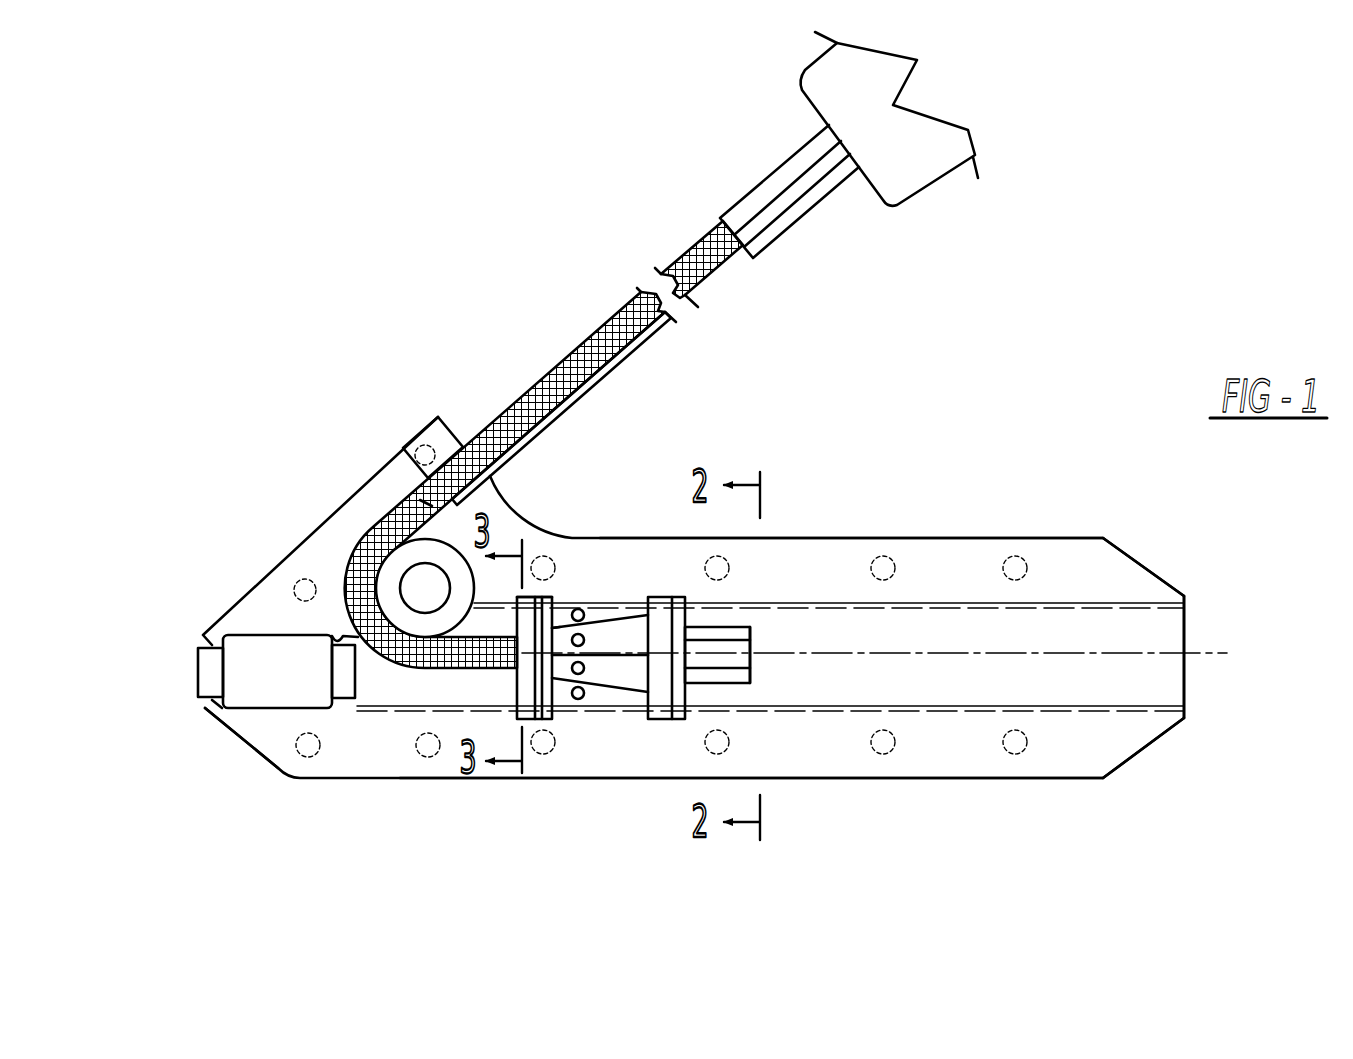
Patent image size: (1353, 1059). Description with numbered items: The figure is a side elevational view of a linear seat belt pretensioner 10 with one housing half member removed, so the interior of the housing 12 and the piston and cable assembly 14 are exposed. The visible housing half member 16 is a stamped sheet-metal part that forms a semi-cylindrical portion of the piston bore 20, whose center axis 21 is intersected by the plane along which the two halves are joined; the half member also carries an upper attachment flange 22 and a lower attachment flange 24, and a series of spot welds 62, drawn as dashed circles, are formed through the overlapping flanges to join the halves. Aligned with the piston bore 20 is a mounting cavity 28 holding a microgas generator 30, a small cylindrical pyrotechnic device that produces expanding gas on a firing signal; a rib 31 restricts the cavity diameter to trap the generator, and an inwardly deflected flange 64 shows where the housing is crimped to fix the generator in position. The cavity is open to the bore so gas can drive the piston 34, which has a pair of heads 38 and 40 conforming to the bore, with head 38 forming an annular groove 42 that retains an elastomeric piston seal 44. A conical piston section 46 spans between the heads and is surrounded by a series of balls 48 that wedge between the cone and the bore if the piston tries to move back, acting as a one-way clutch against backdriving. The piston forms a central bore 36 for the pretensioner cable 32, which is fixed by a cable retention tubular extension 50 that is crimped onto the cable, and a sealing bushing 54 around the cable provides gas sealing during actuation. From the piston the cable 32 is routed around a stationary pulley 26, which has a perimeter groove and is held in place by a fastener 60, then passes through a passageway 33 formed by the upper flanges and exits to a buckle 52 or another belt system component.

The linear pretensioner 10 is at (905, 384).
The housing 12 is at (823, 533).
The piston and cable assembly 14 is at (563, 356).
The housing half member 16 is at (870, 536).
The piston bore 20 is at (1140, 675).
The center axis 21 is at (1210, 653).
The upper attachment flange 22 is at (968, 537).
The lower attachment flange 24 is at (975, 778).
The stationary pulley 26 is at (423, 492).
The mounting cavity 28 is at (240, 712).
The microgas generator 30 is at (198, 672).
The rib 31 is at (333, 704).
The pretensioner cable 32 is at (545, 422).
The passageway 33 is at (427, 498).
The piston 34 is at (636, 693).
The central bore 36 is at (726, 640).
The piston head 38 is at (543, 722).
The piston head 40 is at (668, 720).
The annular groove 42 is at (535, 597).
The elastomeric piston seal 44 is at (560, 616).
The conical piston section 46 is at (598, 695).
The balls 48 is at (588, 612).
The cable retention tubular extension 50 is at (730, 685).
The buckle 52 is at (807, 93).
The sealing bushing 54 is at (453, 452).
The fastener 60 is at (417, 577).
The spot welds 62 is at (295, 592).
The inwardly deflected flange 64 is at (207, 708).